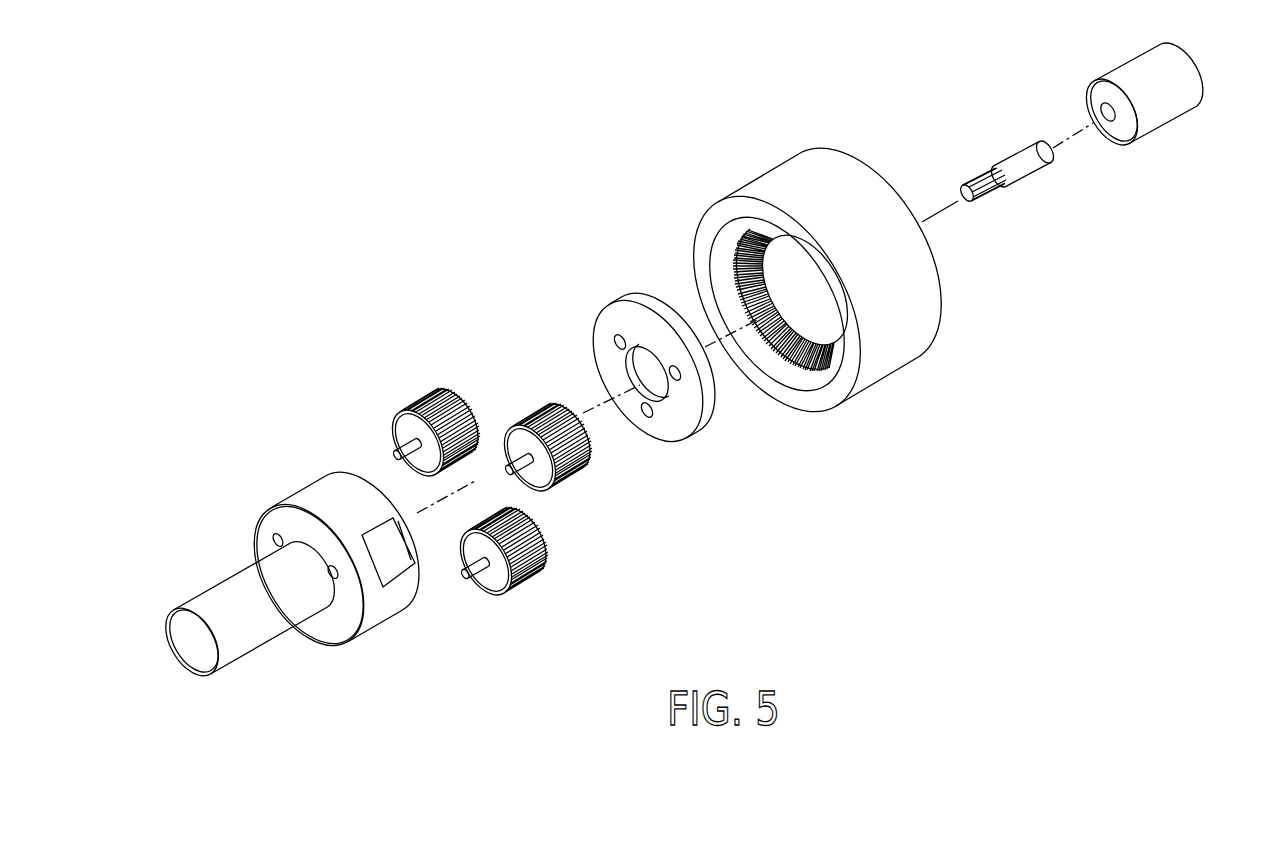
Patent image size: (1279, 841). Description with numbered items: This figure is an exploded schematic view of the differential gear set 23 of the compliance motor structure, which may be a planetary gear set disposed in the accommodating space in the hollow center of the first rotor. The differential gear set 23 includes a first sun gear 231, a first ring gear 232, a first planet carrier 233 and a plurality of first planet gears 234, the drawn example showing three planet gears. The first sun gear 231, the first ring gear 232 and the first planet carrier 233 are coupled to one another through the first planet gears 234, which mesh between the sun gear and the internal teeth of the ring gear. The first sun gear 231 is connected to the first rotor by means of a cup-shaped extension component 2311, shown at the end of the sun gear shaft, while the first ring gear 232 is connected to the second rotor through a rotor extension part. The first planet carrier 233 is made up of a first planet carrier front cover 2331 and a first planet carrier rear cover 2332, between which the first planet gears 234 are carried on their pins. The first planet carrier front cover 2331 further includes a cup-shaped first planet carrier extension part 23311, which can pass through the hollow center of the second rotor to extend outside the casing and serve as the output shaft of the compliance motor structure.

The differential gear set 23 is at (176, 151).
The first sun gear 231 is at (1023, 162).
The cup-shaped extension component 2311 is at (1152, 107).
The first ring gear 232 is at (772, 186).
The first planet carrier 233 is at (503, 296).
The first planet carrier front cover 2331 is at (317, 492).
The first planet carrier extension part 23311 is at (217, 598).
The first planet carrier rear cover 2332 is at (620, 325).
The first planet gears 234 is at (445, 390).